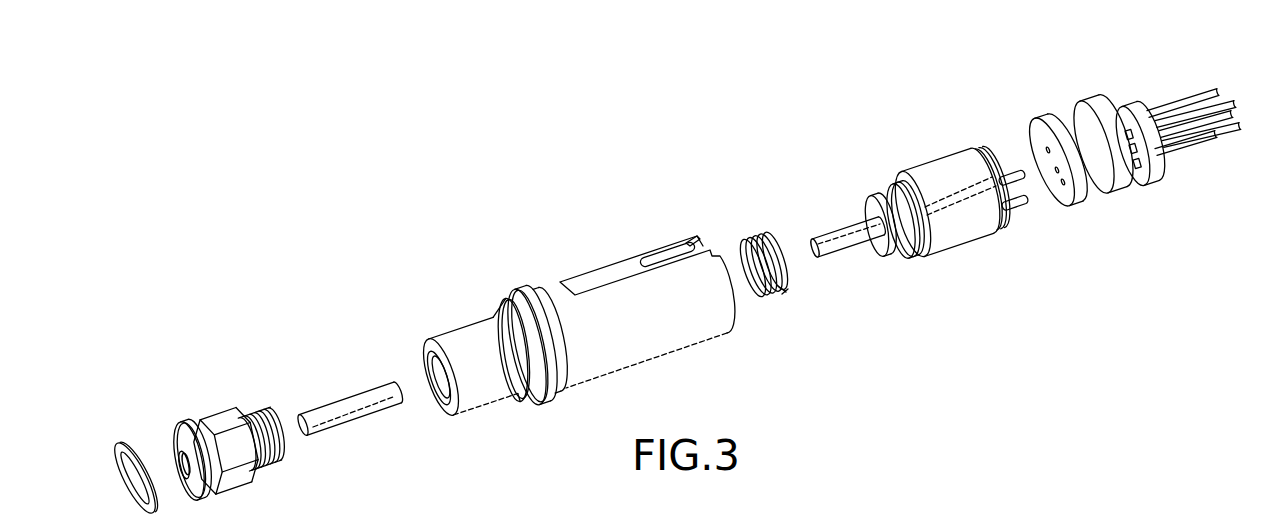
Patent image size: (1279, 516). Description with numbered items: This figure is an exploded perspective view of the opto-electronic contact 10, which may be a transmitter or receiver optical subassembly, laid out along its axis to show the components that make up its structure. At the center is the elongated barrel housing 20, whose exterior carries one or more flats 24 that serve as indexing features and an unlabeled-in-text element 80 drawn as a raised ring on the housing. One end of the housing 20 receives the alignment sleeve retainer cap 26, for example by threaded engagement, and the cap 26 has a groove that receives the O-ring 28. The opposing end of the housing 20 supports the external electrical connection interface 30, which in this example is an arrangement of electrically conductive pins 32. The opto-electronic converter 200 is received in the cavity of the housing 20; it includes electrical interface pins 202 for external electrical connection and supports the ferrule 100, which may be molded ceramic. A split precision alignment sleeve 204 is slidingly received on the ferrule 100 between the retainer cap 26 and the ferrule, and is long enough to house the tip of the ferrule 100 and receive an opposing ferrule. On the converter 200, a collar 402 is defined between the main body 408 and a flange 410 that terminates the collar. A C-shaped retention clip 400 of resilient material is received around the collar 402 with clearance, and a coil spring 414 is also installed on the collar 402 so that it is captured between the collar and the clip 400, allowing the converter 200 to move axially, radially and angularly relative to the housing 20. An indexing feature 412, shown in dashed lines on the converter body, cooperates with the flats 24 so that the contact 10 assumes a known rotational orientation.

The contact 10 is at (668, 190).
The barrel housing 20 is at (575, 310).
The flats 24 is at (595, 270).
The alignment sleeve retainer cap 26 is at (214, 410).
The O-ring 28 is at (122, 441).
The external electrical connection interface 30 is at (1152, 104).
The electrically conductive pins 32 is at (1198, 138).
The flange 80 is at (517, 288).
The ferrule 100 is at (832, 228).
The opto-electronic converter 200 is at (928, 158).
The electrical interface pins 202 is at (1015, 203).
The precision alignment sleeve 204 is at (342, 398).
The retention clip 400 is at (757, 228).
The collar 402 is at (912, 250).
The main body 408 is at (977, 243).
The flange 410 is at (889, 253).
The indexing feature 412 is at (957, 207).
The coil spring 414 is at (753, 300).